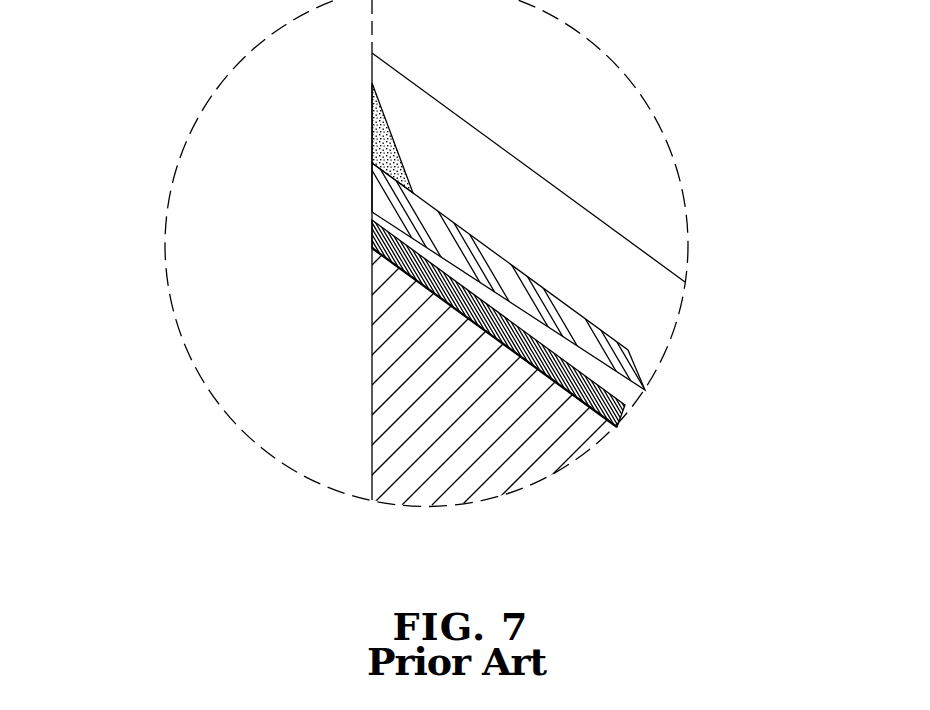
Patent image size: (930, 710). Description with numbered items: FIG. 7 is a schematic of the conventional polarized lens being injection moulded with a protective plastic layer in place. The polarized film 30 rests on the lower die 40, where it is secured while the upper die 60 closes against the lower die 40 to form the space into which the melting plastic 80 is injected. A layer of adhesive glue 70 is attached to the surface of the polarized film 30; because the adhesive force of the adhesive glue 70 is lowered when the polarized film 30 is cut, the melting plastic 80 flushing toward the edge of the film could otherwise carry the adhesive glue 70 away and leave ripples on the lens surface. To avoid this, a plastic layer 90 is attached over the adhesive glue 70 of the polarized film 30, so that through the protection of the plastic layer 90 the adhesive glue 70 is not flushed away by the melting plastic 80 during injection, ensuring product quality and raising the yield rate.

The polarized film 30 is at (622, 420).
The lower die 40 is at (537, 458).
The upper die 60 is at (650, 176).
The adhesive glue 70 is at (623, 390).
The melting plastic 80 is at (372, 141).
The plastic layer 90 is at (610, 358).